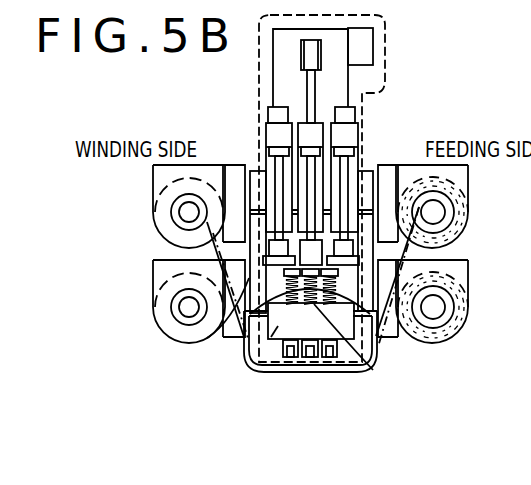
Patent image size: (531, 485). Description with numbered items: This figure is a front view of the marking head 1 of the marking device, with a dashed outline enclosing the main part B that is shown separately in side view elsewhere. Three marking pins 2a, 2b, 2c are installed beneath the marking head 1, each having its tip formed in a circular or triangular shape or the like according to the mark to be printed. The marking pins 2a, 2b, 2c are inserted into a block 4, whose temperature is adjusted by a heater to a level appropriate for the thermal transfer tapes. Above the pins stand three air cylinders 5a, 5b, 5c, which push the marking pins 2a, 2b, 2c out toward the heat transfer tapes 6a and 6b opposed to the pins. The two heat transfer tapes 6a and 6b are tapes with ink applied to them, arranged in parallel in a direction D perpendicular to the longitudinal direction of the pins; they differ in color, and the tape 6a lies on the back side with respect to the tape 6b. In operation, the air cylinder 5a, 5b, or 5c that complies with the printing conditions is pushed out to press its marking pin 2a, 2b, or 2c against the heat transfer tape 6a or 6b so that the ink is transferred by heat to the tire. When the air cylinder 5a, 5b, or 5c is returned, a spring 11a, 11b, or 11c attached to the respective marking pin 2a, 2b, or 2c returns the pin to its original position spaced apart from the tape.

The marking head 1 is at (432, 79).
The main part B is at (388, 28).
The marking pin 2a is at (293, 358).
The marking pin 2b is at (312, 358).
The marking pin 2c is at (330, 358).
The block 4 is at (271, 369).
The air cylinder 5a is at (266, 133).
The air cylinder 5b is at (298, 122).
The air cylinder 5c is at (357, 133).
The heat transfer tape 6a is at (214, 345).
The heat transfer tape 6b is at (207, 340).
The spring 11a is at (242, 365).
The spring 11b is at (358, 360).
The spring 11c is at (379, 355).
The direction D is at (524, 381).